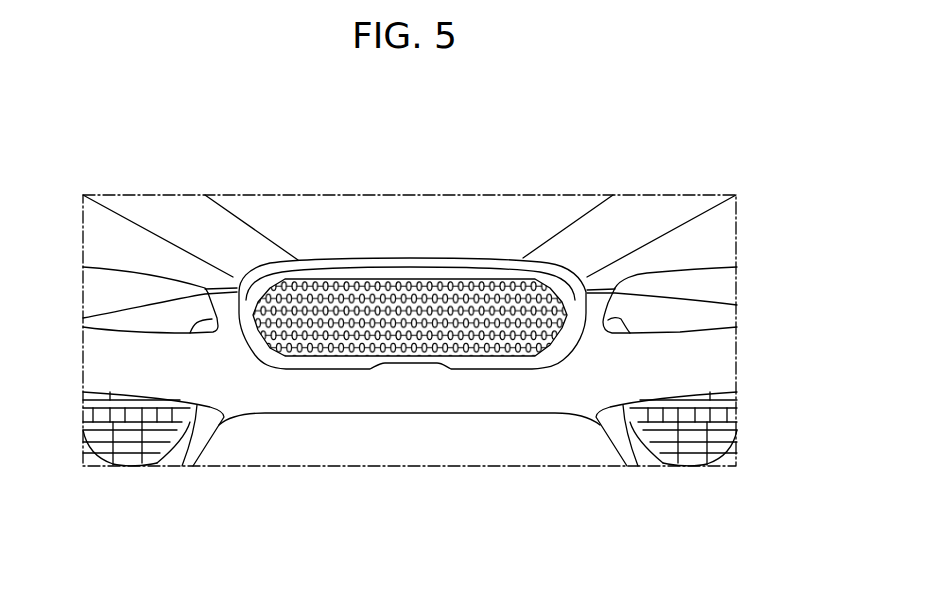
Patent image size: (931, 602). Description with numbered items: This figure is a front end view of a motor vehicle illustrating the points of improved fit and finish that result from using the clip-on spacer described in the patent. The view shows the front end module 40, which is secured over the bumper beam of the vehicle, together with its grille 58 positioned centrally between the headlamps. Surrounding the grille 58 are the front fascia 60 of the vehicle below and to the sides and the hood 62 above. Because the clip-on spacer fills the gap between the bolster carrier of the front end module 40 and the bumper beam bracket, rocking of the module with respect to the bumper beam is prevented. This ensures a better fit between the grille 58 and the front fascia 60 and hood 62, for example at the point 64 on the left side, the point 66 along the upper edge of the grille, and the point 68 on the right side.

The front end module 40 is at (206, 484).
The grille 58 is at (318, 358).
The front fascia 60 is at (678, 362).
The hood 62 is at (520, 217).
The point 64 is at (84, 318).
The point 66 is at (400, 258).
The point 68 is at (735, 304).